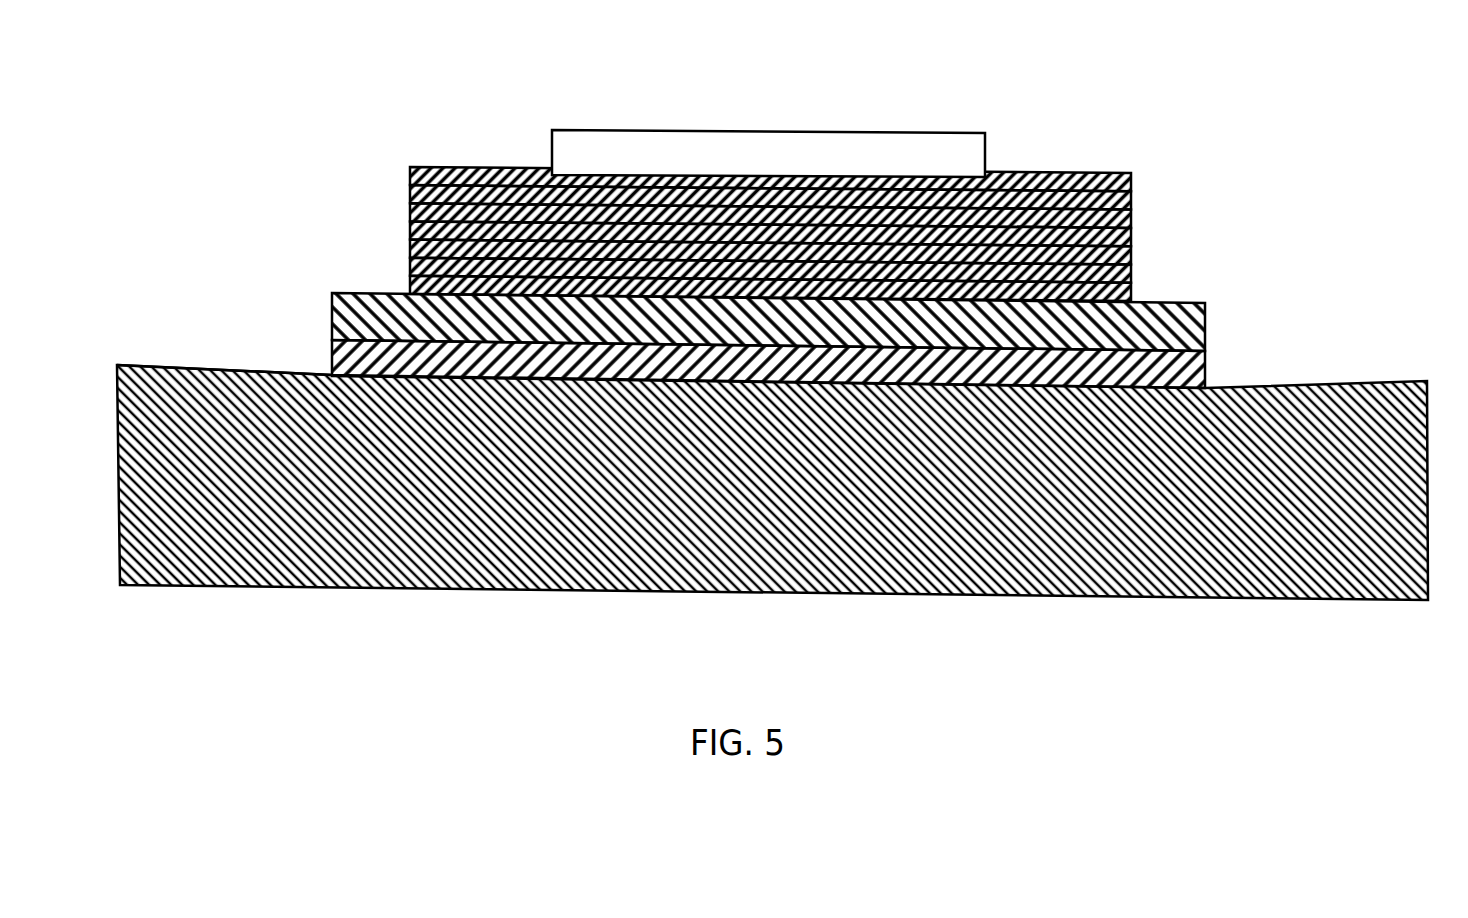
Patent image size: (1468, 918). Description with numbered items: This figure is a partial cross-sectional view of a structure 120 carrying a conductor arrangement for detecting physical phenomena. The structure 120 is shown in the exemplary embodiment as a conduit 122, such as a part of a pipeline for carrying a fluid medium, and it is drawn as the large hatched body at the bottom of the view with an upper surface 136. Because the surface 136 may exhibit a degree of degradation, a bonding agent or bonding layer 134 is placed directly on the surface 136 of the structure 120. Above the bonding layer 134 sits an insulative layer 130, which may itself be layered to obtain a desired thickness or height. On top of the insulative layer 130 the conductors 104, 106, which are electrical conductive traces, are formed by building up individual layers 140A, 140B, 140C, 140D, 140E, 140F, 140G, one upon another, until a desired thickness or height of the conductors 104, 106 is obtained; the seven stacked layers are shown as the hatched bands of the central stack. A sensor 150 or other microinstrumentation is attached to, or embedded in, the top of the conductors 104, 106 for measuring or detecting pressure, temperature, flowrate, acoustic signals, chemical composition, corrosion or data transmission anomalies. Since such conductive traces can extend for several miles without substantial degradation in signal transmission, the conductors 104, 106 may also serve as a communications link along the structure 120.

The conductor 104 is at (769, 200).
The conductor 106 is at (769, 200).
The structure 120 is at (772, 539).
The conduit 122 is at (270, 580).
The insulative layer 130 is at (1197, 328).
The bonding layer 134 is at (1197, 363).
The surface 136 is at (177, 359).
The individual layer 140A is at (402, 277).
The individual layer 140B is at (402, 259).
The individual layer 140C is at (402, 240).
The individual layer 140D is at (402, 220).
The individual layer 140E is at (402, 201).
The individual layer 140F is at (402, 183).
The individual layer 140G is at (402, 165).
The sensor 150 is at (798, 125).